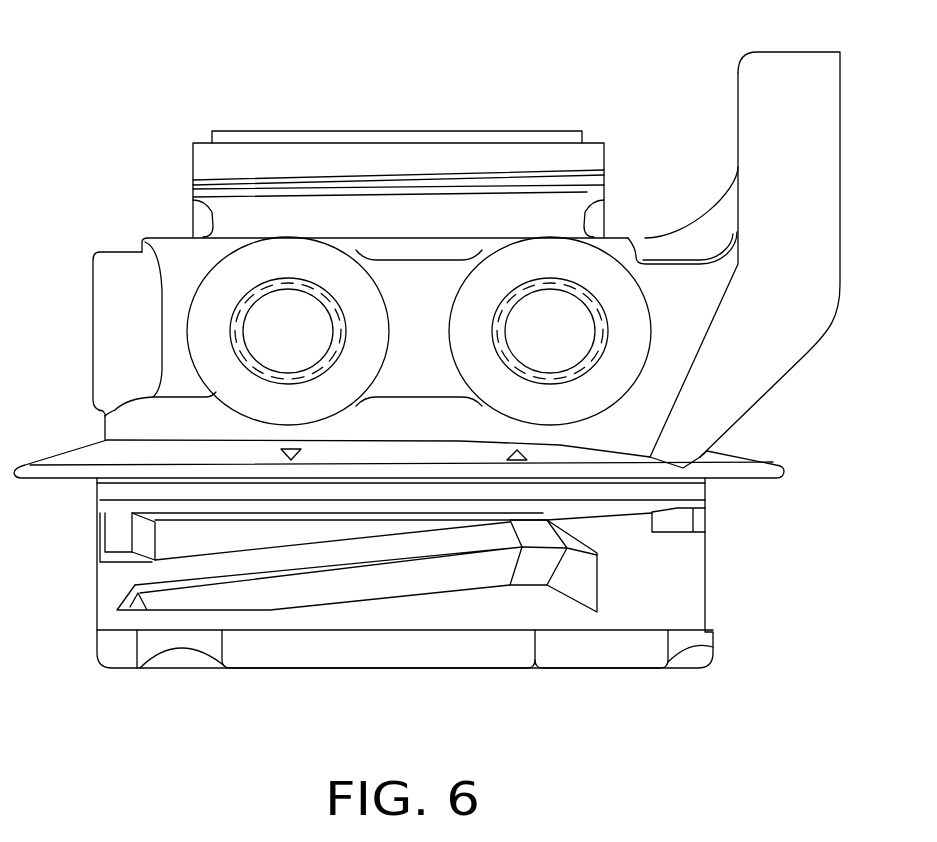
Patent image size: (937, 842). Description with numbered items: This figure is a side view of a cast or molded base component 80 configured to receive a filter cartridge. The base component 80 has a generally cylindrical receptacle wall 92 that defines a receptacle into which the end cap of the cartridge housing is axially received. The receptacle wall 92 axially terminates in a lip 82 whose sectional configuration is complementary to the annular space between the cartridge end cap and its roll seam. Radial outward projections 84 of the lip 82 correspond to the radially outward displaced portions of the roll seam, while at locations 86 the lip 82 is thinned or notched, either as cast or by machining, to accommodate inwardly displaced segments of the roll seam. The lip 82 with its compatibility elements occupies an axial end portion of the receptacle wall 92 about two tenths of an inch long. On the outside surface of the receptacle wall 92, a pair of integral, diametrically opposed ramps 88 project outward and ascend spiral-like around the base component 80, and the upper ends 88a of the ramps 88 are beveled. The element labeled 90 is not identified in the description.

The base component 80 is at (147, 150).
The lip 82 is at (573, 650).
The radial outward projections 84 is at (167, 658).
The locations 86 is at (458, 655).
The ramps 88 is at (180, 570).
The upper ends 88a is at (585, 547).
The mounting arm 90 is at (755, 87).
The receptacle wall 92 is at (687, 580).